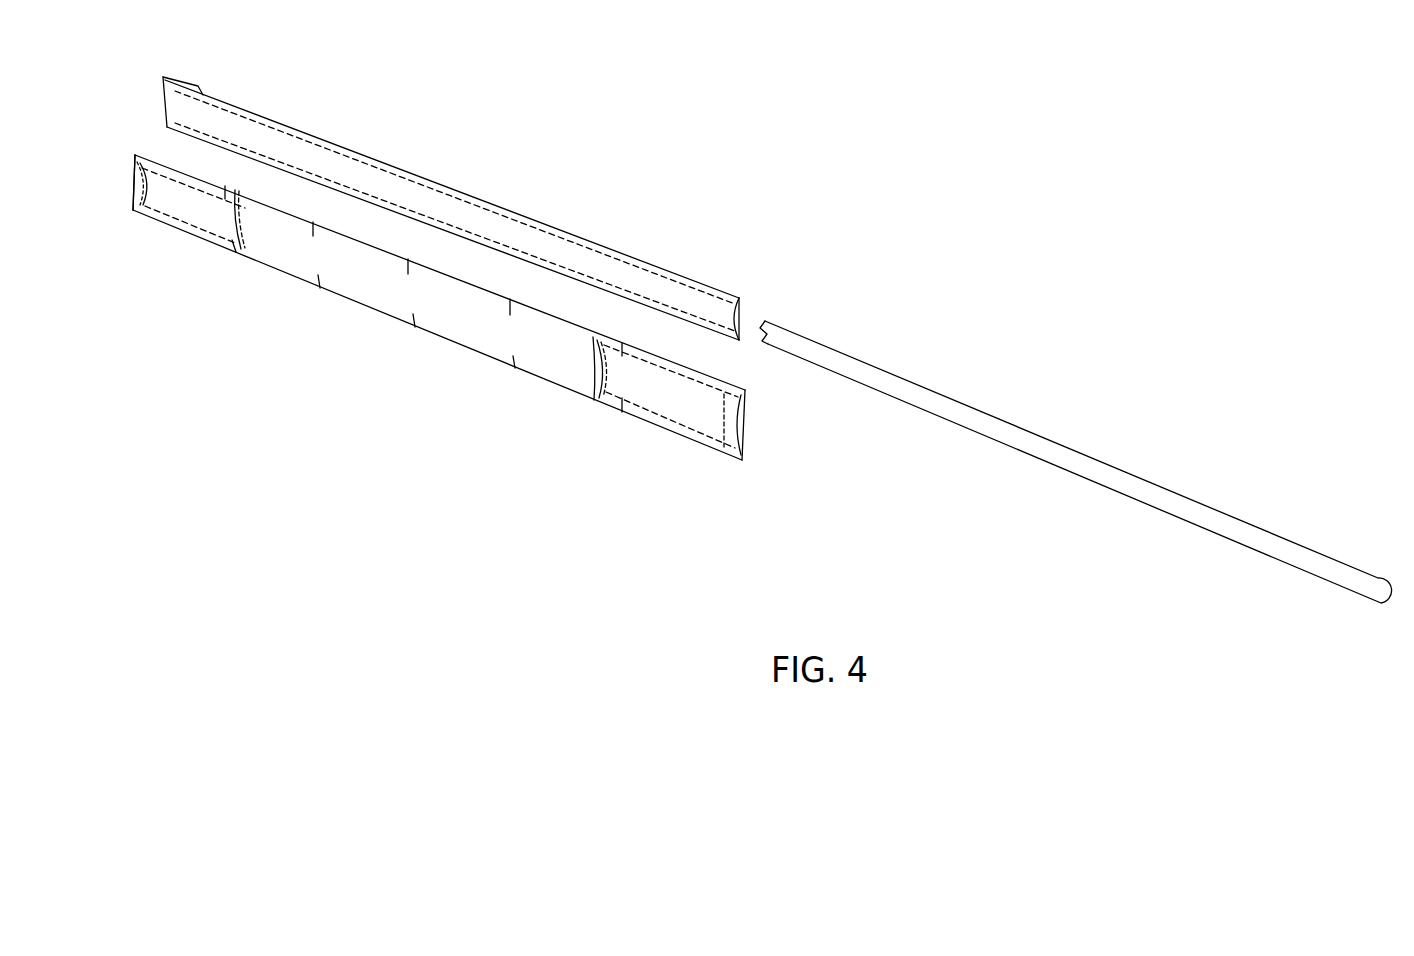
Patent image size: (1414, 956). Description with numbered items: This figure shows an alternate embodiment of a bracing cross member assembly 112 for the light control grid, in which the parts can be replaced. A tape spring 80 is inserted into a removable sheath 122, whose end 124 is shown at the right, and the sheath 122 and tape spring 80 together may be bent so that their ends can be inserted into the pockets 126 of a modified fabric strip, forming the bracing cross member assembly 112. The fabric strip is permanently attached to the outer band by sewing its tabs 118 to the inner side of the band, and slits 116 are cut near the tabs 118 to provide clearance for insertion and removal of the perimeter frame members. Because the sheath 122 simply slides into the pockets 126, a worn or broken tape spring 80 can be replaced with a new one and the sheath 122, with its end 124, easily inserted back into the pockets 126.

The bracing cross member assembly 112 is at (632, 72).
The removable sheath 122 is at (527, 240).
The strap end 124 is at (746, 313).
The pockets 126 is at (244, 224).
The slits 116 is at (153, 193).
The tabs 118 is at (133, 212).
The tape spring 80 is at (1017, 434).